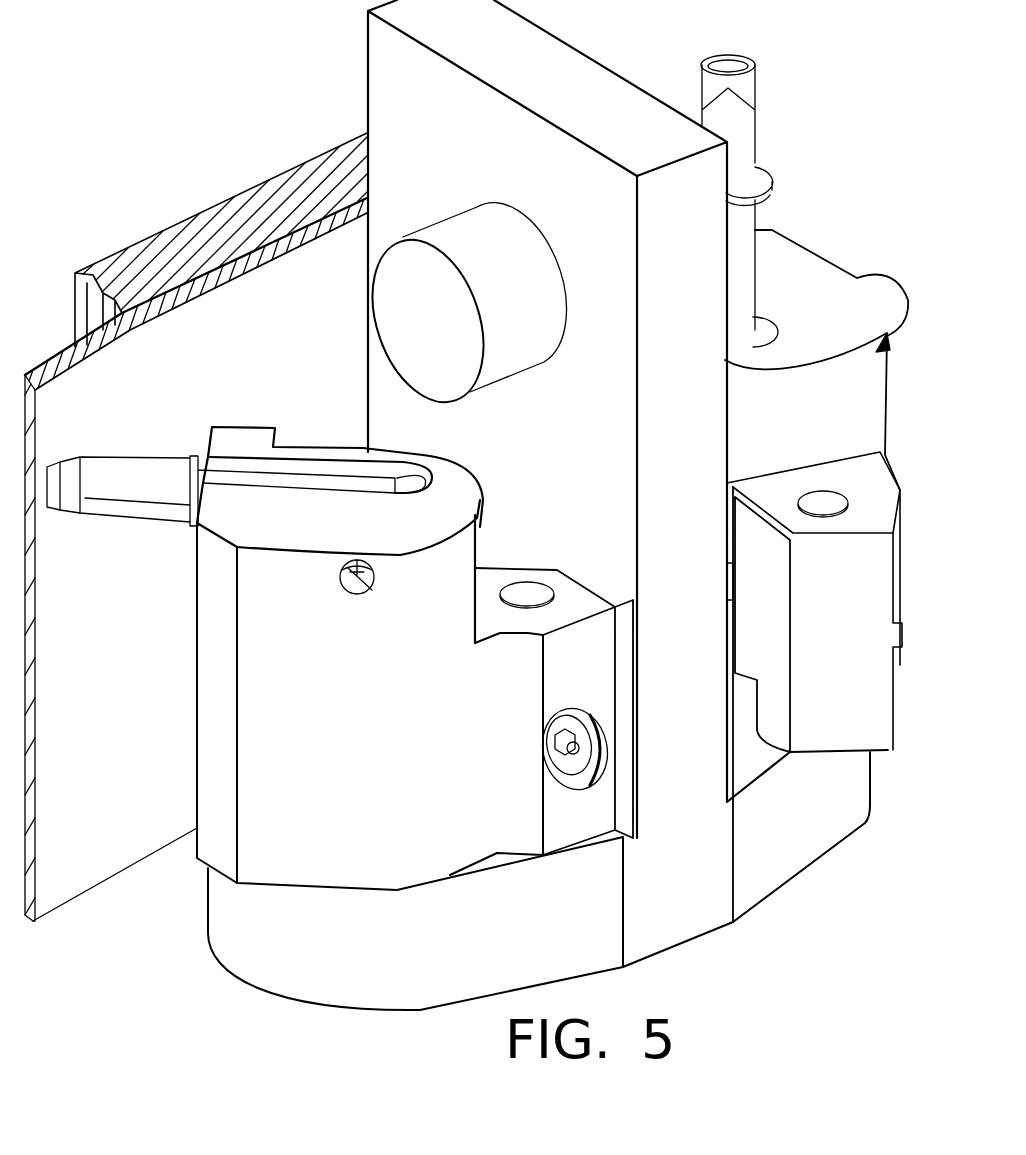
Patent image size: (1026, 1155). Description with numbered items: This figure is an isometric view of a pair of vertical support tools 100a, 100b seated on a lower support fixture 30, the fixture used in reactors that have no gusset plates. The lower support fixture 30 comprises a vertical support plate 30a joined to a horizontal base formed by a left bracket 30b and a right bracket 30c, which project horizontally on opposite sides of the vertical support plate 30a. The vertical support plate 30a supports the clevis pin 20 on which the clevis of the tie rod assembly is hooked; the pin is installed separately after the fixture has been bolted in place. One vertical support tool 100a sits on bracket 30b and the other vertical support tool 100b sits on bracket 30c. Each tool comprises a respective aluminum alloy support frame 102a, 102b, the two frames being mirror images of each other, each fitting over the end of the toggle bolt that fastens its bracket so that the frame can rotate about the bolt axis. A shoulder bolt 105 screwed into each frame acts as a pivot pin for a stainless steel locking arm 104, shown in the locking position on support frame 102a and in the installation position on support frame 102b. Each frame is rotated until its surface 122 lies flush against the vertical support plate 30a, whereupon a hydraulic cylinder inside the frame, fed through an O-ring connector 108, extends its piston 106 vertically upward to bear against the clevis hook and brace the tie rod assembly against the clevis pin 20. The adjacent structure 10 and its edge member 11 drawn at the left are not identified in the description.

The wall panel 10 is at (130, 260).
The panel edge member 11 is at (220, 263).
The clevis pin 20 is at (405, 323).
The lower support fixture 30 is at (362, 184).
The vertical support plate 30a is at (390, 80).
The left bracket 30b is at (297, 987).
The right bracket 30c is at (780, 873).
The vertical support tool 100a is at (327, 658).
The vertical support tool 100b is at (782, 539).
The support frame 102a is at (257, 702).
The support frame 102b is at (853, 277).
The locking arm 104 is at (92, 528).
The shoulder bolt 105 is at (370, 583).
The piston 106 is at (527, 590).
The O-ring connector 108 is at (548, 752).
The surface 122 is at (817, 685).